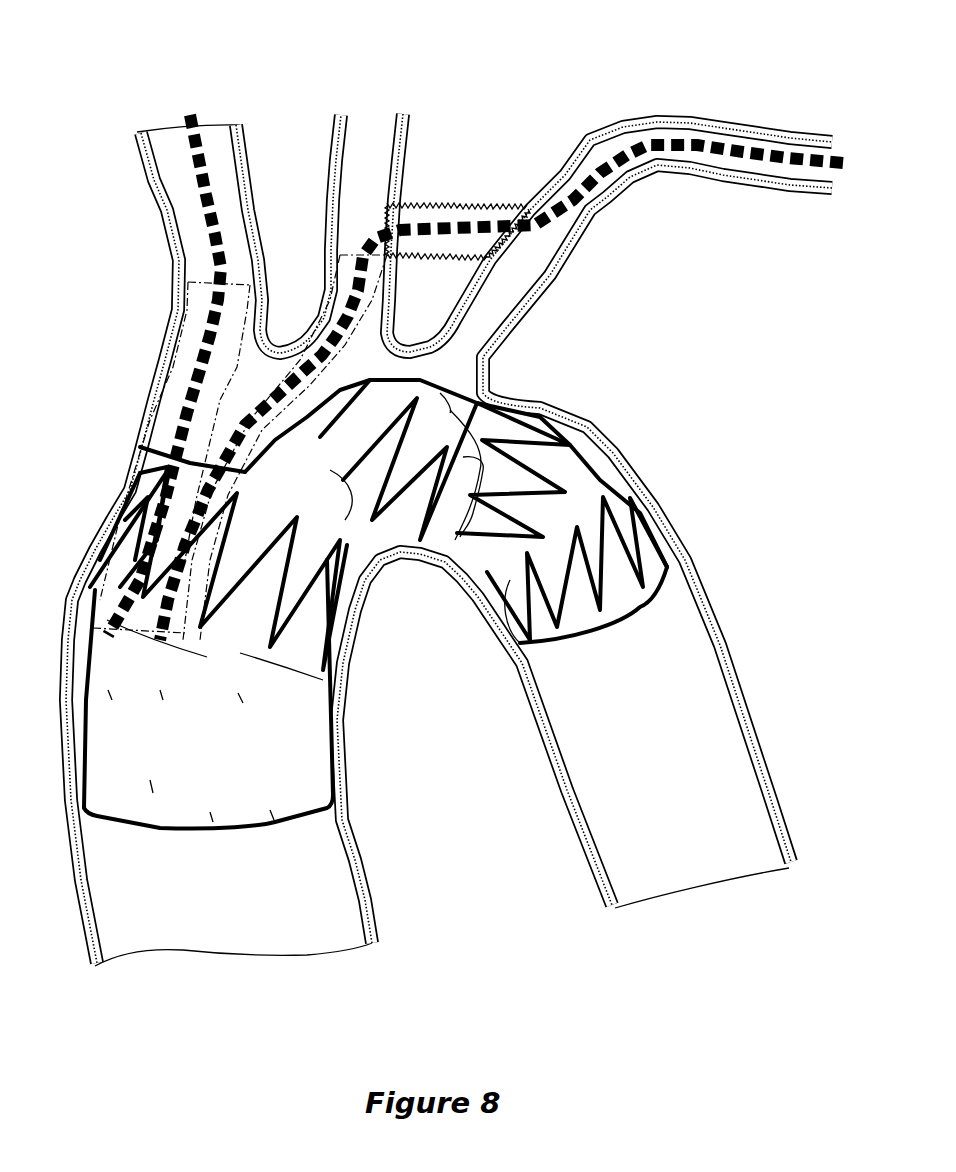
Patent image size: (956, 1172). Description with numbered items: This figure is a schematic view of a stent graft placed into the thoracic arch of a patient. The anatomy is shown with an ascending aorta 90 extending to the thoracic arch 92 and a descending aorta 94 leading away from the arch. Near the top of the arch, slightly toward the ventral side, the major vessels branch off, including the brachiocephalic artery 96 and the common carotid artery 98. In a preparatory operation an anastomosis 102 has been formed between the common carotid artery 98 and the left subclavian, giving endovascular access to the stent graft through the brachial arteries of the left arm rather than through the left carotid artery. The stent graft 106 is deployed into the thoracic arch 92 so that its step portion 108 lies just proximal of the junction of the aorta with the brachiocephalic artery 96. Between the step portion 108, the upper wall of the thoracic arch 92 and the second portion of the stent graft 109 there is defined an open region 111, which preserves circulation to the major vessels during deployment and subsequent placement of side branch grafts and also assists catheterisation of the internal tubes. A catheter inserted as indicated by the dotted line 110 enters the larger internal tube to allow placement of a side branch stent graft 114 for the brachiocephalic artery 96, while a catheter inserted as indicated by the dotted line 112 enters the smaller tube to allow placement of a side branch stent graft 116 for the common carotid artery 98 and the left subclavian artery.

The ascending aorta 90 is at (340, 773).
The thoracic arch 92 is at (410, 567).
The descending aorta 94 is at (533, 693).
The brachiocephalic artery 96 is at (167, 240).
The common carotid artery 98 is at (327, 150).
The anastomosis 102 is at (453, 207).
The stent graft 106 is at (475, 455).
The step portion 108 is at (140, 488).
The second portion of the stent graft 109 is at (455, 385).
The dotted line 110 is at (213, 217).
The open region 111 is at (218, 386).
The dotted line 112 is at (644, 143).
The side branch stent graft 114 is at (157, 420).
The side branch stent graft 116 is at (262, 388).